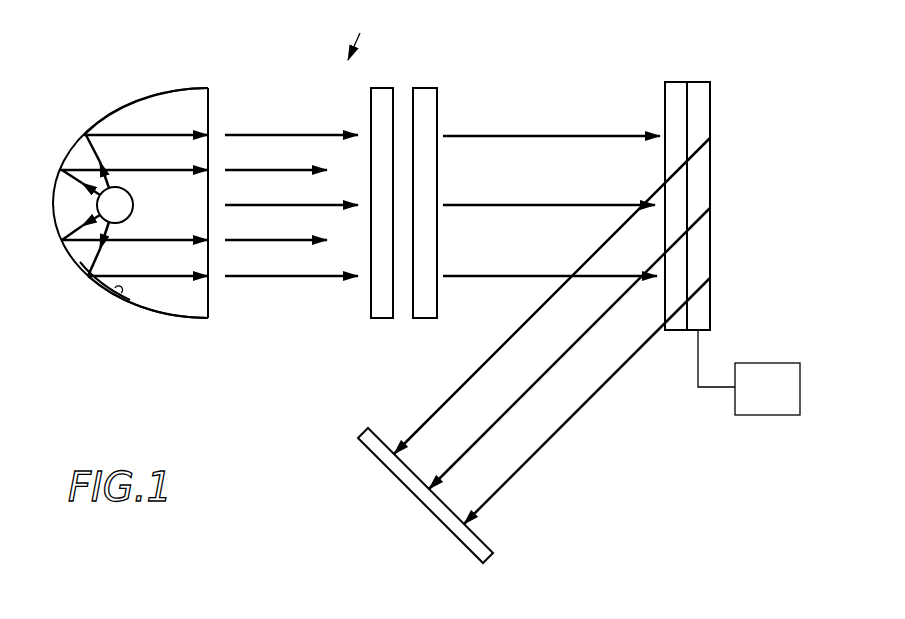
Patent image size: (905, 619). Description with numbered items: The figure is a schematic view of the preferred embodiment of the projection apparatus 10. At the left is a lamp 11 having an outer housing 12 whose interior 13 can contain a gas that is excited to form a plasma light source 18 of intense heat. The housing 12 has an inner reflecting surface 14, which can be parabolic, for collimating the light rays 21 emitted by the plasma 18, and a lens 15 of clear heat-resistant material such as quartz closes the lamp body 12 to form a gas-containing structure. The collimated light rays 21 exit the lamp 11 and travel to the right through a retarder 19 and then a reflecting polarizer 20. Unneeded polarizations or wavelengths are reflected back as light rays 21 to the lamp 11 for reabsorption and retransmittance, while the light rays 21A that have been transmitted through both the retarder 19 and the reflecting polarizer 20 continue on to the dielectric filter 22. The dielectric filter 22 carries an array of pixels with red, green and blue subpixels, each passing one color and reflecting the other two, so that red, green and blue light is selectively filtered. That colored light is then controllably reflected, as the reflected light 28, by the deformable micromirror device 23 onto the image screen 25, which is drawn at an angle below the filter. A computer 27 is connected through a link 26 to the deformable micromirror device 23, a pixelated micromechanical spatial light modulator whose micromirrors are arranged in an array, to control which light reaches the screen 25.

The projection apparatus 10 is at (364, 34).
The lamp 11 is at (75, 148).
The outer housing 12 is at (185, 318).
The interior 13 is at (183, 102).
The inner reflecting surface 14 is at (122, 295).
The lens 15 is at (210, 122).
The plasma light source 18 is at (133, 205).
The retarder 19 is at (383, 88).
The reflecting polarizer 20 is at (425, 318).
The light rays 21 is at (159, 170).
The transmitted light rays 21A is at (527, 135).
The dielectric filter 22 is at (690, 82).
The deformable micromirror device 23 is at (700, 82).
The image screen 25 is at (412, 494).
The link 26 is at (697, 357).
The computer 27 is at (780, 402).
The reflected light 28 is at (428, 418).